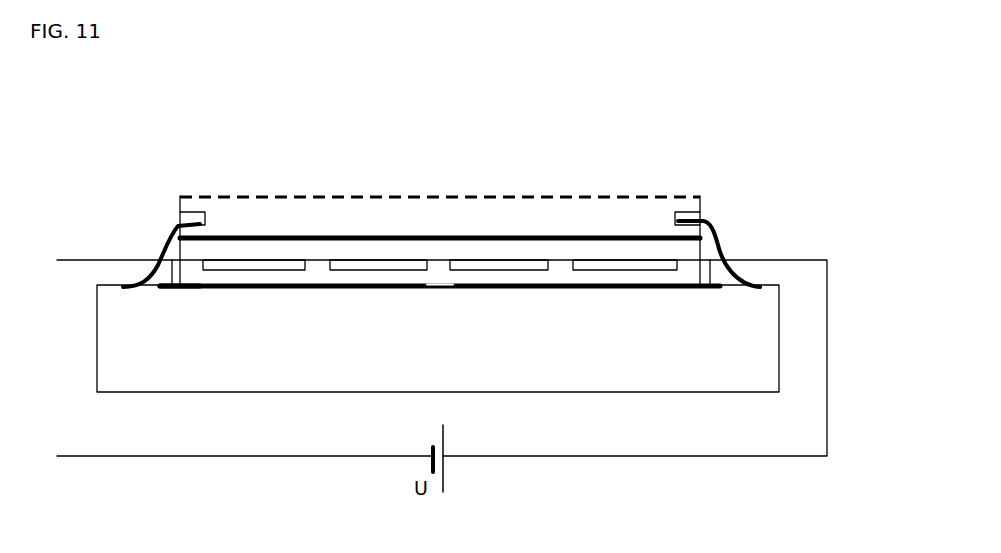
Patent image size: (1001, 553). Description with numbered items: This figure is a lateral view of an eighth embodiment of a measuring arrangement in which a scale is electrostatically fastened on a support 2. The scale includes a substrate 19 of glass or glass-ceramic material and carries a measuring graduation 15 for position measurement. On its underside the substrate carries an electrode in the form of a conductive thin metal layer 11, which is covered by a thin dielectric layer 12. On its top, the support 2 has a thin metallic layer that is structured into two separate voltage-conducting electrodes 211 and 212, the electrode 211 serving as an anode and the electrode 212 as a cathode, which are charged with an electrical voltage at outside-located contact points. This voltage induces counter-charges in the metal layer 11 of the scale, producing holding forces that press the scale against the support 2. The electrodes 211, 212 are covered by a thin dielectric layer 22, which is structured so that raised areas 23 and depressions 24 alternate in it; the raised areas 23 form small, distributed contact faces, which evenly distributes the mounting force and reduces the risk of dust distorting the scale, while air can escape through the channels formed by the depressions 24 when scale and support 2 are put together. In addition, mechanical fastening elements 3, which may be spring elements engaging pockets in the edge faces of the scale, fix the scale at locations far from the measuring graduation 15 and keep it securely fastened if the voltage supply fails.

The support 2 is at (758, 375).
The fastening elements 3 is at (160, 252).
The conductive thin metal layer 11 is at (592, 236).
The dielectric layer 12 is at (465, 252).
The measuring graduation 15 is at (368, 200).
The substrate 19 is at (244, 215).
The dielectric layer 22 is at (642, 273).
The raised areas 23 is at (313, 266).
The depressions 24 is at (373, 266).
The electrode 211 is at (193, 287).
The electrode 212 is at (557, 285).